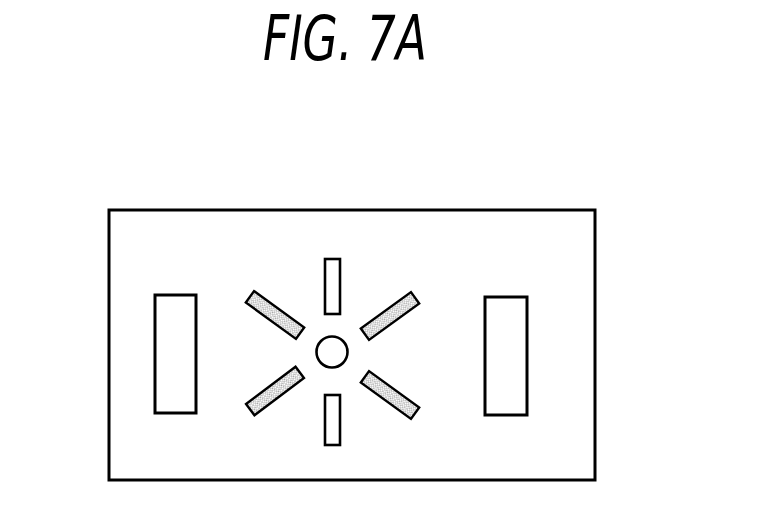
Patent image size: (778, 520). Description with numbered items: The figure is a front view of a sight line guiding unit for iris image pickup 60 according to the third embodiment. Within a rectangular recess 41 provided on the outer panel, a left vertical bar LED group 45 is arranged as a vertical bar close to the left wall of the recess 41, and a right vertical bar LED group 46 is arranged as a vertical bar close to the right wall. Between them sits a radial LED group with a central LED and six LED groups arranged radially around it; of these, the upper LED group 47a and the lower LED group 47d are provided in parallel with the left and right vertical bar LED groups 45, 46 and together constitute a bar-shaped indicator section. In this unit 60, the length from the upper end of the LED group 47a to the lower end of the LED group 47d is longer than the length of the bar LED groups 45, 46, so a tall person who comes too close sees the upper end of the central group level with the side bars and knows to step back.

The sight line guiding unit for iris image pickup 60 is at (592, 205).
The rectangular recess 41 is at (482, 237).
The left vertical bar LED group 45 is at (165, 378).
The right vertical bar LED group 46 is at (503, 350).
The LED group 47a is at (336, 292).
The LED group 47d is at (330, 422).